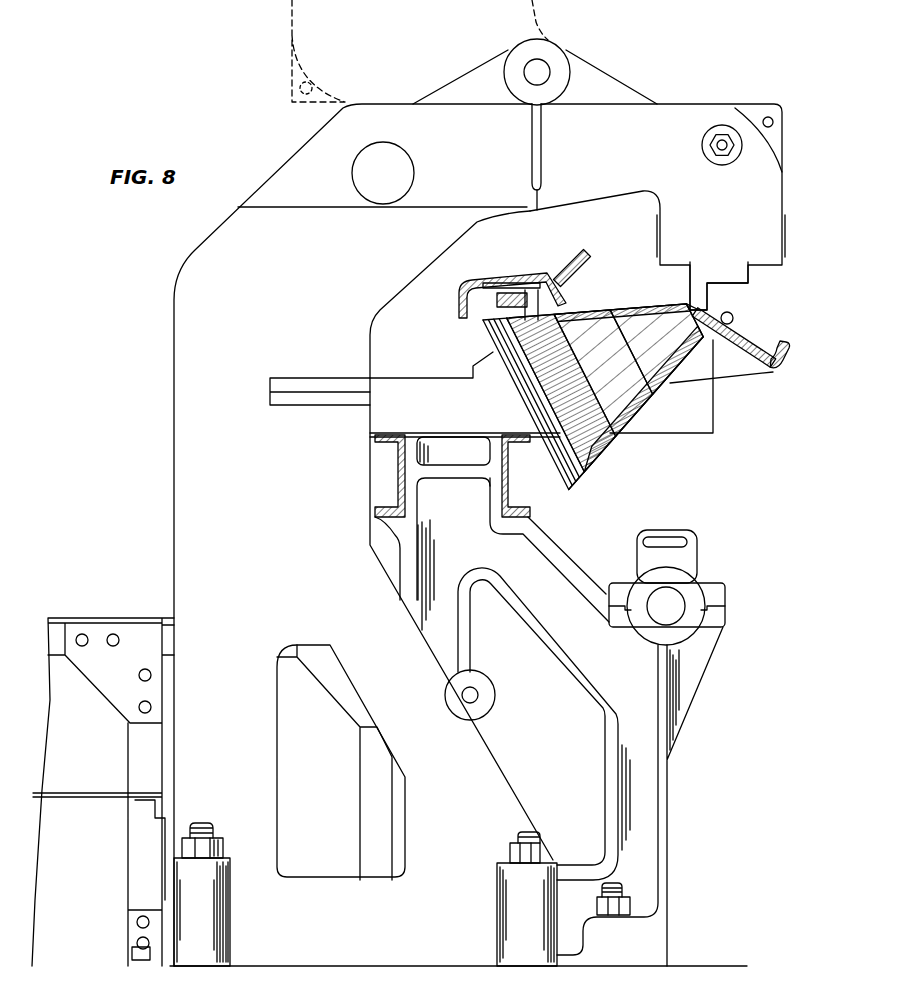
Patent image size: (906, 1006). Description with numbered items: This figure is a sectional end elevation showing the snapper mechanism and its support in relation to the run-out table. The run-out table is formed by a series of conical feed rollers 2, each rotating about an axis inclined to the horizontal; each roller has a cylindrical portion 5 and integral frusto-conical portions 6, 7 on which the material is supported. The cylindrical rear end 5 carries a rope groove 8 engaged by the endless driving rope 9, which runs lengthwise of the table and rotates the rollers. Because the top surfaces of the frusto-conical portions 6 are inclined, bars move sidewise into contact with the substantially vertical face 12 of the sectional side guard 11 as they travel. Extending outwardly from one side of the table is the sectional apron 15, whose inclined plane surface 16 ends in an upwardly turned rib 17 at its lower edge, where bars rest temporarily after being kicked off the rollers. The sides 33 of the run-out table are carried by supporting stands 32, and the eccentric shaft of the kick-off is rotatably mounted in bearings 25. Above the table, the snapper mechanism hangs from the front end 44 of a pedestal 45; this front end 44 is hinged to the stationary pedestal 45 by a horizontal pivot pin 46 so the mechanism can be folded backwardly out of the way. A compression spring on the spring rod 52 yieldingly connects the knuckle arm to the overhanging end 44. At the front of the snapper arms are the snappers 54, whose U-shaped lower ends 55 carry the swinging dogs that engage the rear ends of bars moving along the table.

The conical feed rollers 2 is at (603, 373).
The cylindrical portion 5 is at (561, 392).
The frusto-conical portion 6 is at (586, 308).
The frusto-conical portion 7 is at (650, 307).
The rope groove 8 is at (523, 395).
The endless driving rope 9 is at (490, 318).
The sectional side guard 11 is at (555, 268).
The vertical face 12 is at (563, 292).
The sectional apron 15 is at (752, 362).
The inclined plane surface 16 is at (731, 335).
The upwardly turned rib 17 is at (783, 350).
The bearings 25 is at (713, 597).
The supporting stands 32 is at (541, 545).
The sides of the run-out table 33 is at (398, 467).
The front end of the pedestal 44 is at (278, 32).
The pedestal 45 is at (389, 535).
The horizontal pivot pin 46 is at (545, 68).
The spring rod 52 is at (726, 138).
The snappers 54 is at (719, 286).
The U-shaped lower ends 55 is at (726, 311).